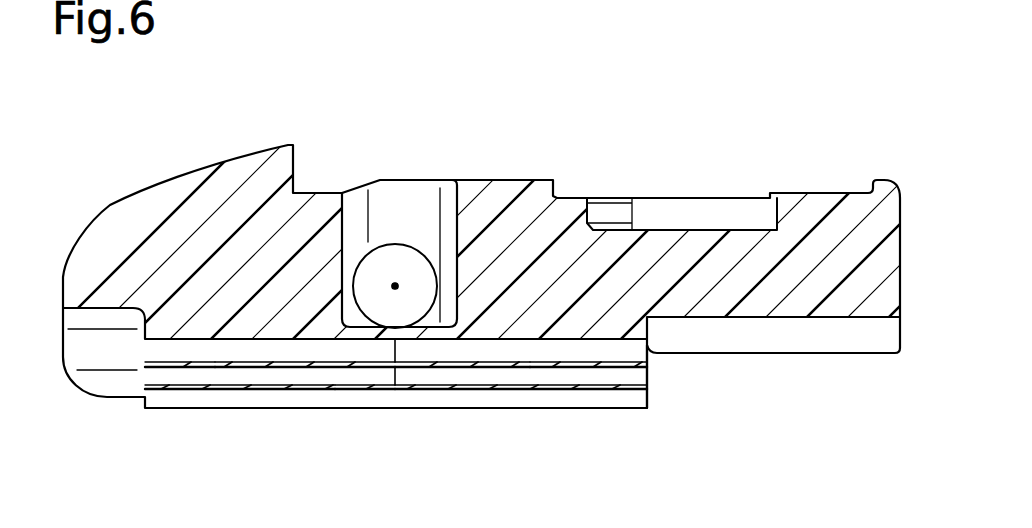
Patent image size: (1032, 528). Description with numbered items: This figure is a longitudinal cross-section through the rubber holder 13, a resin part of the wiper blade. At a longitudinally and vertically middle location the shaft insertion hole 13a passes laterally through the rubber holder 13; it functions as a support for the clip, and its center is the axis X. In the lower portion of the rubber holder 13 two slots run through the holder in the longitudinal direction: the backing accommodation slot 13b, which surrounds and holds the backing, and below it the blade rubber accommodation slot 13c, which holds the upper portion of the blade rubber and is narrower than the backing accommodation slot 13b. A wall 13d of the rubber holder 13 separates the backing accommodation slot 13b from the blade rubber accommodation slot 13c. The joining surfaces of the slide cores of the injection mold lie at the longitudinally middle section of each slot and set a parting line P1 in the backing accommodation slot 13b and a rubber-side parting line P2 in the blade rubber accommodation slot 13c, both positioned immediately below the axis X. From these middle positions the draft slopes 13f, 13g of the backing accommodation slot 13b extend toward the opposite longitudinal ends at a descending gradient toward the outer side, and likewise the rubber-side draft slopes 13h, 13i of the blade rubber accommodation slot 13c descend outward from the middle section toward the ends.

The rubber holder 13 is at (512, 180).
The shaft insertion hole 13a is at (402, 244).
The axis of the shaft insertion hole X is at (397, 287).
The draft slope 13f is at (178, 363).
The backing accommodation slot 13b is at (246, 363).
The blade rubber accommodation slot 13c is at (306, 386).
The rubber-side draft slope 13h is at (360, 386).
The wall 13d is at (467, 363).
The rubber-side draft slope 13i is at (537, 386).
The draft slope 13g is at (587, 363).
The parting line P1 is at (397, 350).
The rubber-side parting line P2 is at (397, 385).